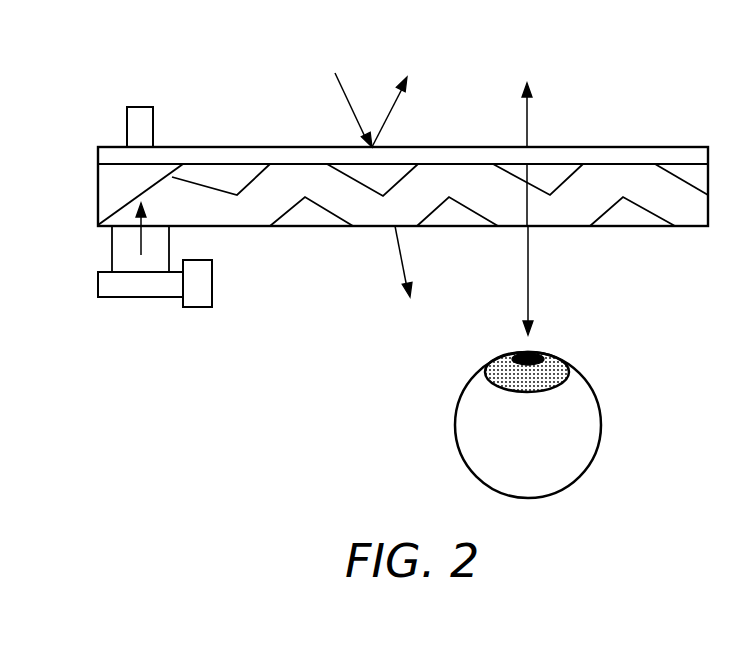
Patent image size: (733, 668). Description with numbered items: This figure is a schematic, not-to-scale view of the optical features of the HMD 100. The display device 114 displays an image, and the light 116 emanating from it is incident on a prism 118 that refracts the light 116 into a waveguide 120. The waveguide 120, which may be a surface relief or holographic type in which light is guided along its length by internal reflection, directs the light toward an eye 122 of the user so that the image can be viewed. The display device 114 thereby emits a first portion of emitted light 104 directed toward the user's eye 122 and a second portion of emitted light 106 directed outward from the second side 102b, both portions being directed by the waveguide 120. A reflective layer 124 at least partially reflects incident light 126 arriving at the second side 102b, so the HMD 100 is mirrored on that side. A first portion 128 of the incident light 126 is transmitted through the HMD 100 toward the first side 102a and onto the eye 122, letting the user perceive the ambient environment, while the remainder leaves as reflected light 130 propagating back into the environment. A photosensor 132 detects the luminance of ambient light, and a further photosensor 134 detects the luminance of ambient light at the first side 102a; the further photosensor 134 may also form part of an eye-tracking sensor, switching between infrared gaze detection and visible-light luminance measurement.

The HMD 100 is at (150, 68).
The first side 102a is at (294, 242).
The second side 102b is at (264, 123).
The first portion of emitted light 104 is at (528, 273).
The second portion of emitted light 106 is at (527, 127).
The display device 114 is at (142, 297).
The light 116 is at (147, 212).
The prism 118 is at (98, 182).
The waveguide 120 is at (320, 191).
The eye 122 is at (592, 392).
The reflective layer 124 is at (634, 147).
The incident light 126 is at (362, 67).
The first portion of the incident light 128 is at (403, 260).
The reflected light 130 is at (392, 102).
The photosensor 132 is at (128, 140).
The further photosensor 134 is at (203, 307).